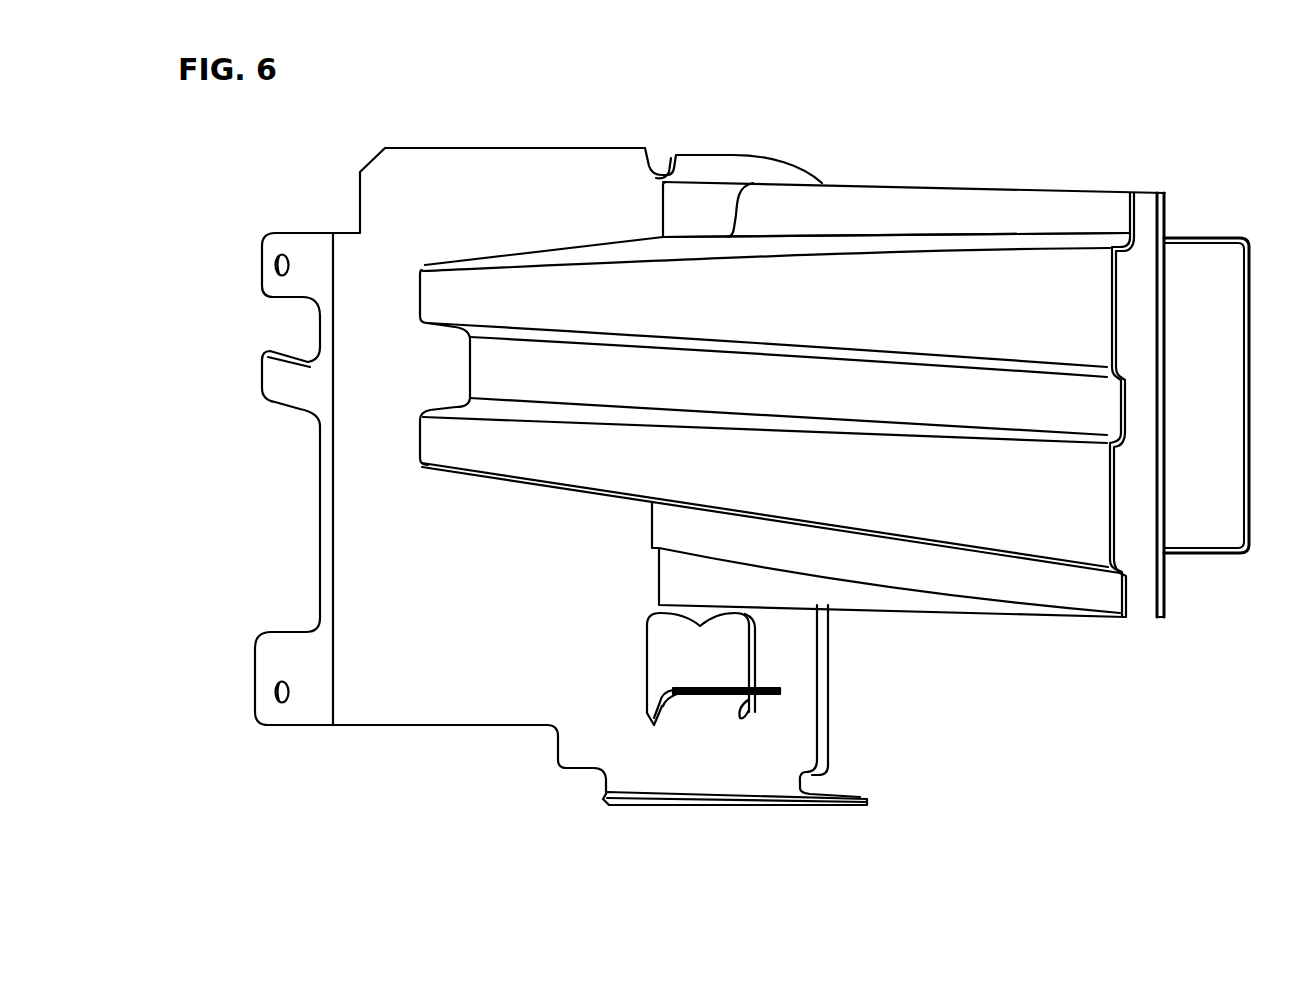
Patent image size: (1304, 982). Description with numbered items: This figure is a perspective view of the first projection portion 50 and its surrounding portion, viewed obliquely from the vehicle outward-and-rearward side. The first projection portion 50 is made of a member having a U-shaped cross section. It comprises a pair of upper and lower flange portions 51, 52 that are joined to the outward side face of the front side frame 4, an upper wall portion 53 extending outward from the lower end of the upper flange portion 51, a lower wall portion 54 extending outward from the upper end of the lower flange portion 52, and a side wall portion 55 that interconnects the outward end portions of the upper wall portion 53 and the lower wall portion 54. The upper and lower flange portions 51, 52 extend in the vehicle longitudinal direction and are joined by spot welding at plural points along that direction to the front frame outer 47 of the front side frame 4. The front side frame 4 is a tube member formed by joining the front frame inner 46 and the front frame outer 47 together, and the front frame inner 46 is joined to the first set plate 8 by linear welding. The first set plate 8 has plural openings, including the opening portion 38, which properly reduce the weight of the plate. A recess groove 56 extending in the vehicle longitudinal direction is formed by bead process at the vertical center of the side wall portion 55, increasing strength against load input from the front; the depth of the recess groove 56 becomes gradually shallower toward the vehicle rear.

The first set plate 8 is at (503, 148).
The first projection portion 50 is at (767, 378).
The upper flange portion 51 is at (912, 200).
The lower flange portion 52 is at (930, 585).
The upper wall portion 53 is at (693, 245).
The lower wall portion 54 is at (617, 500).
The side wall portion 55 is at (1020, 285).
The recess groove 56 is at (477, 352).
The opening portion 38 is at (650, 688).
The front side frame 4 is at (1217, 366).
The front frame outer 47 is at (1160, 277).
The front frame inner 46 is at (1182, 158).